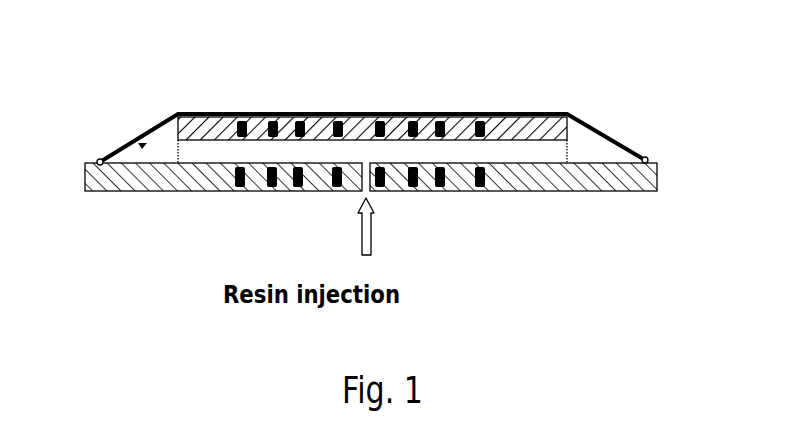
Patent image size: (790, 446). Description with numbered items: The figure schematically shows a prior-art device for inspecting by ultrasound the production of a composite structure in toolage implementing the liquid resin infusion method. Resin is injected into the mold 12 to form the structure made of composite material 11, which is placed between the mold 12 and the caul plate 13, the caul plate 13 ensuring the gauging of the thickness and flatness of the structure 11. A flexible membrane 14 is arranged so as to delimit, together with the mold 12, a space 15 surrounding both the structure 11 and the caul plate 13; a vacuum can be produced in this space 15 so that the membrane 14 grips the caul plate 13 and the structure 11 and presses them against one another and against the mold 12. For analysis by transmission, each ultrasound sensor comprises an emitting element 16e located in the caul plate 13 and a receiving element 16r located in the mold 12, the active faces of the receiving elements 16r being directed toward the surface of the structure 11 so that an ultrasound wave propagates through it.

The structure made of composite material 11 is at (425, 127).
The mold 12 is at (371, 214).
The caul plate 13 is at (372, 92).
The membrane 14 is at (372, 103).
The space 15 is at (123, 141).
The emitting element 16e is at (361, 91).
The receiving element 16r is at (360, 212).